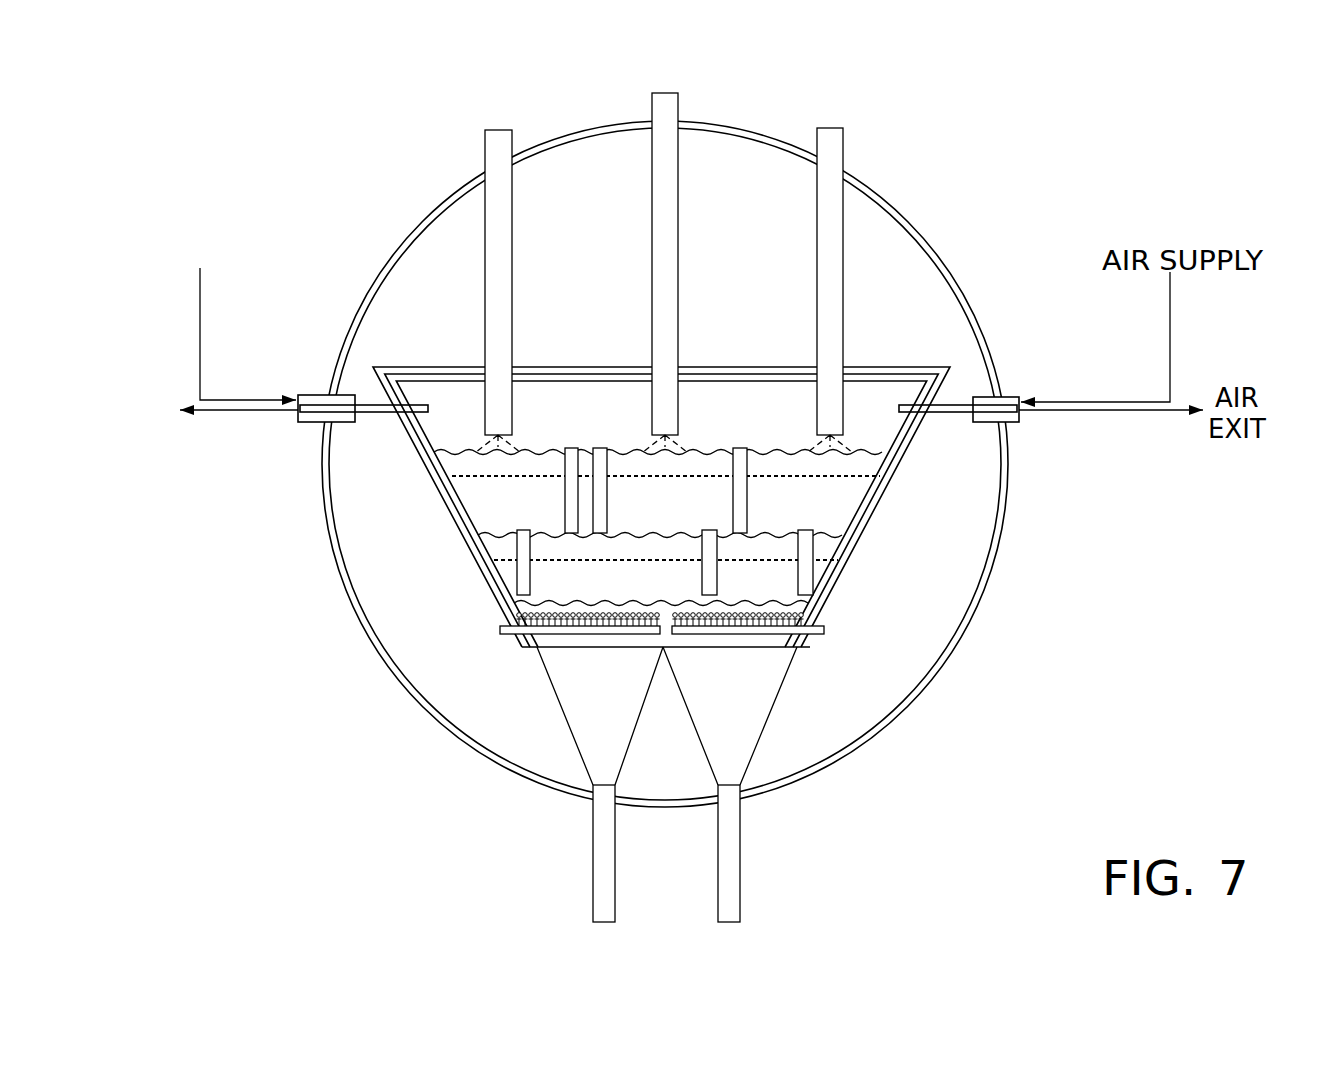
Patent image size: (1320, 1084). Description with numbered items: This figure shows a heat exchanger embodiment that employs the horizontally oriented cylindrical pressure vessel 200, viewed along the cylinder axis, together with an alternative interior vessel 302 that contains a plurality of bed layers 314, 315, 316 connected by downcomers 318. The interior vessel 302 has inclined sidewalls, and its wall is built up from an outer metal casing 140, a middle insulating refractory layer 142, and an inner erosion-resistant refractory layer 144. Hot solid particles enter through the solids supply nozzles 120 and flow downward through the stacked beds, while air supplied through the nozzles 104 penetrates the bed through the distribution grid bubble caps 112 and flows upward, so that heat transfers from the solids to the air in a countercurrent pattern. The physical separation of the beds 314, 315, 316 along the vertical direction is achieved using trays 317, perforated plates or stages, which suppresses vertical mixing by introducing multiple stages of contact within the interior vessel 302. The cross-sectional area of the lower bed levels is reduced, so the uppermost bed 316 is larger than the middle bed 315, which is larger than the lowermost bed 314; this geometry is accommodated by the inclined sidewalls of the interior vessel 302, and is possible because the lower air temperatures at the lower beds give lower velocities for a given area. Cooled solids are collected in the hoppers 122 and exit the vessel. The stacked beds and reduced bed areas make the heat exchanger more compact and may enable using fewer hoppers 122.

The nozzles 104 is at (320, 391).
The distribution grid bubble caps 112 is at (530, 594).
The solids supply nozzles 120 is at (494, 138).
The hoppers 122 is at (557, 690).
The outer metal casing 140 is at (925, 430).
The middle insulating refractory layer 142 is at (892, 487).
The inner erosion-resistant refractory layer 144 is at (843, 567).
The horizontally oriented cylindrical pressure vessel 200 is at (437, 215).
The interior vessel 302 is at (739, 416).
The lowermost bed 314 is at (683, 603).
The middle bed 315 is at (765, 535).
The uppermost bed 316 is at (540, 456).
The trays 317 is at (598, 604).
The downcomers 318 is at (610, 488).